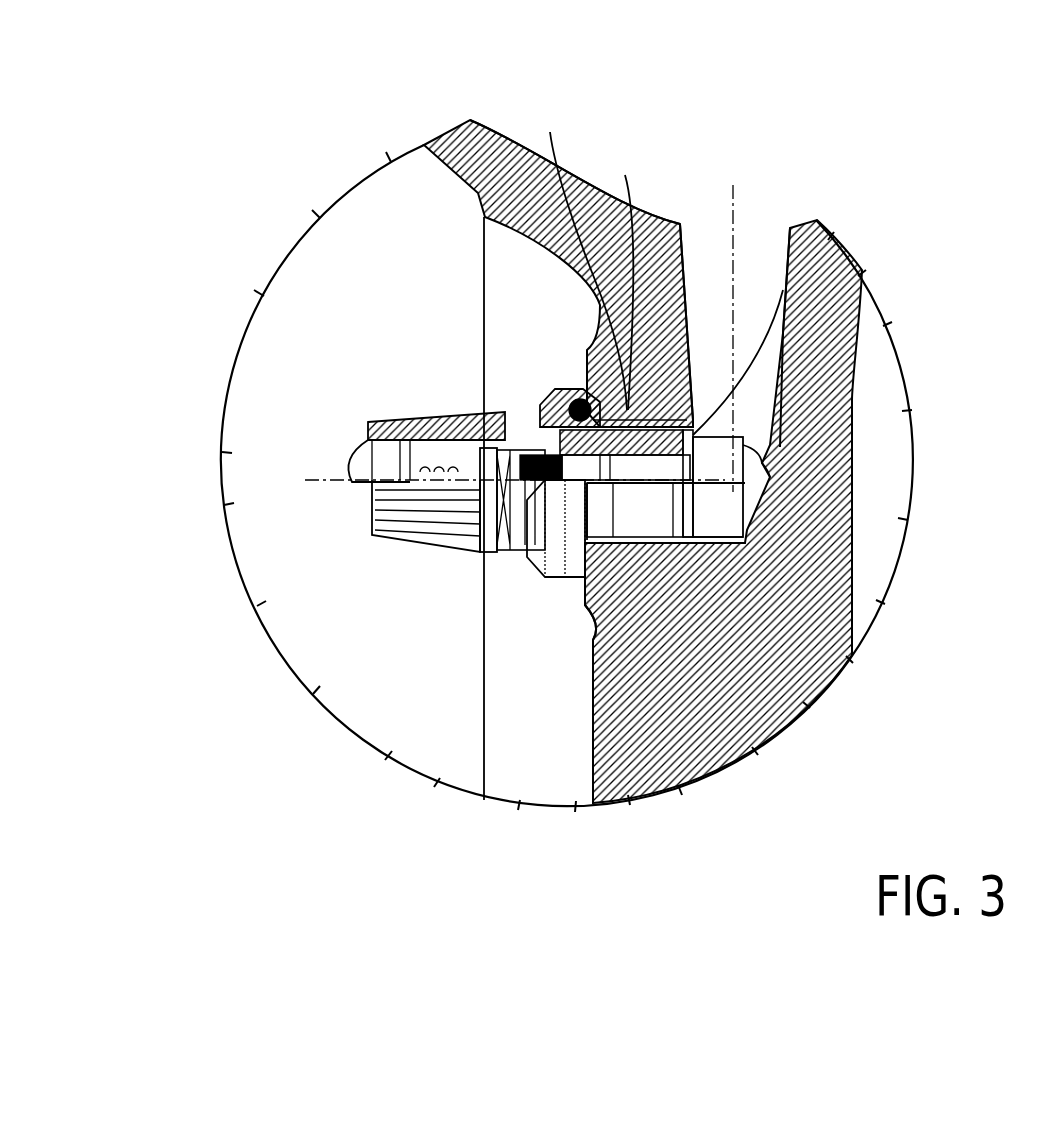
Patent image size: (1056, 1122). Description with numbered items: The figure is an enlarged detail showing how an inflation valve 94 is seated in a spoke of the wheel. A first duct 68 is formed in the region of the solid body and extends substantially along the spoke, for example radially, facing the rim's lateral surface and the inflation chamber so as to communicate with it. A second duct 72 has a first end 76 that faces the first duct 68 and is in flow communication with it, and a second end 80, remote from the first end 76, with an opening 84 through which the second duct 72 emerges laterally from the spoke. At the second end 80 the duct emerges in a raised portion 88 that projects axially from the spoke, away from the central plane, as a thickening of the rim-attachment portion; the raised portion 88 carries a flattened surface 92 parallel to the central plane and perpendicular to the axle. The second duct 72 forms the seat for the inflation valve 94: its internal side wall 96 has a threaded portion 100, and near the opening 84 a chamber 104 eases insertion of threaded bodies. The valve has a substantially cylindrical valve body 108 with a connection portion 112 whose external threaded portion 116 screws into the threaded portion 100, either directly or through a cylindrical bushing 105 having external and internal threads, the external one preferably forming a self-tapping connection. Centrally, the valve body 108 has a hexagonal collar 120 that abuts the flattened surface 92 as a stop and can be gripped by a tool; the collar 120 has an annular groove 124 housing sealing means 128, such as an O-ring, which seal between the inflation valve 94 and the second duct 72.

The first duct 68 is at (703, 263).
The second duct 72 is at (845, 655).
The first end 76 is at (767, 460).
The second end 80 is at (593, 715).
The opening 84 is at (573, 503).
The raised portion 88 is at (597, 608).
The flattened surface 92 is at (583, 606).
The inflation valve 94 is at (392, 572).
The internal side wall 96 is at (611, 276).
The threaded portion 100 is at (632, 548).
The chamber 104 is at (576, 253).
The bushing 105 is at (833, 250).
The valve body 108 is at (535, 412).
The connection portion 112 is at (702, 513).
The threaded portion 116 is at (697, 420).
The collar 120 is at (560, 550).
The annular groove 124 is at (543, 408).
The sealing means 128 is at (560, 183).